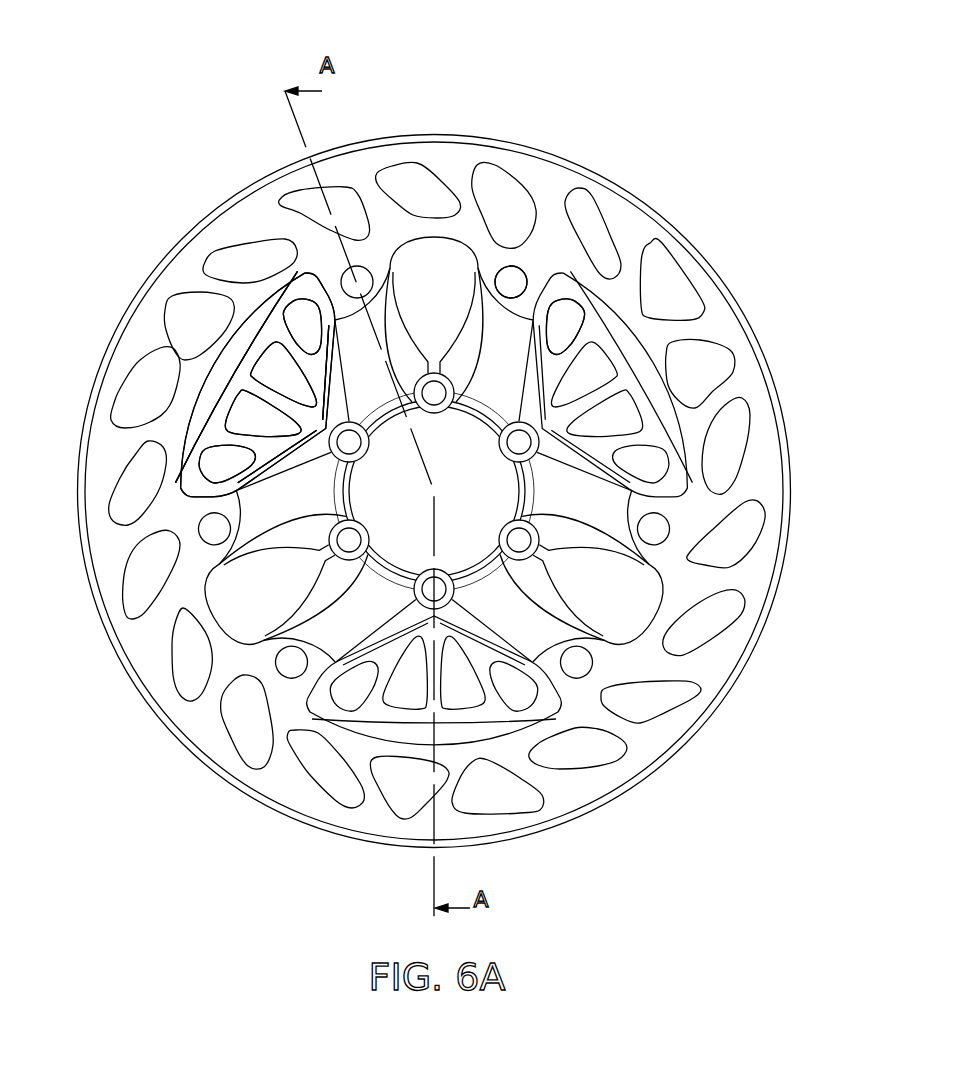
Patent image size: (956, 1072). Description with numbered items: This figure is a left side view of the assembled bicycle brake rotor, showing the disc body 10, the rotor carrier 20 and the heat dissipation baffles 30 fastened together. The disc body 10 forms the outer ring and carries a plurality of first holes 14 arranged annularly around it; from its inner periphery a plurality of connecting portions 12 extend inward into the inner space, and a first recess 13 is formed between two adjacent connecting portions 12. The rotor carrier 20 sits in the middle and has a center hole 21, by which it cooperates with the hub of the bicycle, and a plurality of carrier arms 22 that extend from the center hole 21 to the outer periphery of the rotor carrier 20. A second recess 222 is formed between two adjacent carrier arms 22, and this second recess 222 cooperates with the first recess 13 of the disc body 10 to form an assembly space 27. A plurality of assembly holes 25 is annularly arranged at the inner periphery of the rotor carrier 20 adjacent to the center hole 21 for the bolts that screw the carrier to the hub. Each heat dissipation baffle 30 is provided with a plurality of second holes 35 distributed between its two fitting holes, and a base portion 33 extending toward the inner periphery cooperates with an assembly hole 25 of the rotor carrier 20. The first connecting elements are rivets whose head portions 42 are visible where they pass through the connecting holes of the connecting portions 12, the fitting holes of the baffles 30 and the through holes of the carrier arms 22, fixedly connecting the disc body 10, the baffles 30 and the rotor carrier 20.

The disc body 10 is at (263, 174).
The connecting portion 12 is at (493, 268).
The first recess 13 is at (236, 358).
The first hole 14 is at (577, 236).
The rotor carrier 20 is at (503, 604).
The center hole 21 is at (403, 548).
The carrier arm 22 is at (583, 508).
The assembly hole 25 is at (347, 538).
The assembly space 27 is at (73, 248).
The heat dissipation baffle 30 is at (656, 428).
The base portion 33 is at (547, 423).
The second hole 35 is at (572, 313).
The head portion 42 is at (511, 276).
The second recess 222 is at (228, 470).